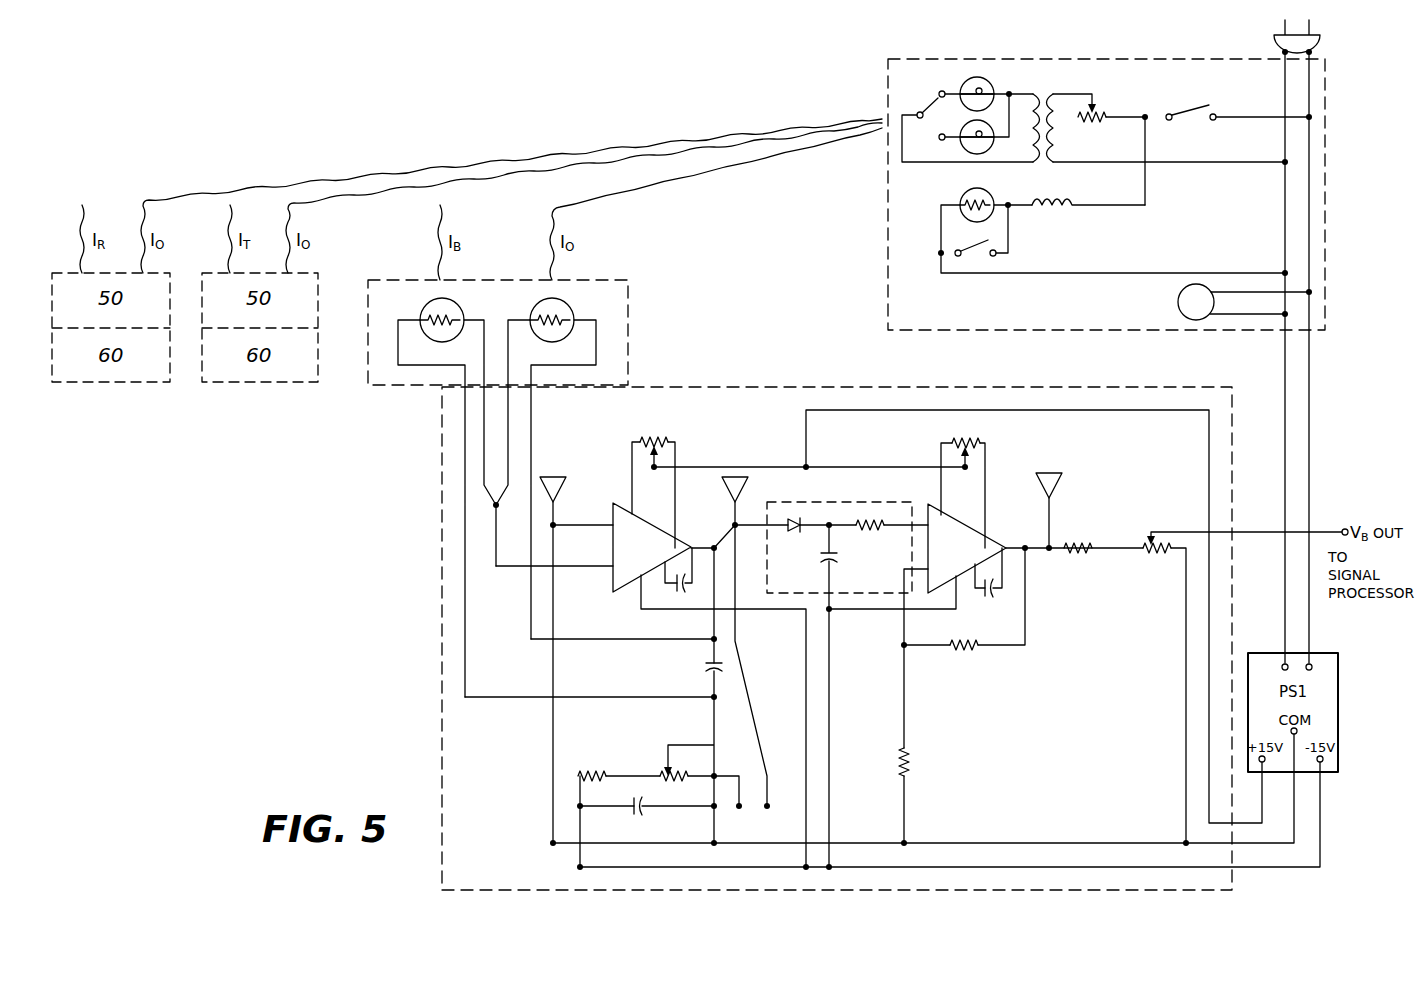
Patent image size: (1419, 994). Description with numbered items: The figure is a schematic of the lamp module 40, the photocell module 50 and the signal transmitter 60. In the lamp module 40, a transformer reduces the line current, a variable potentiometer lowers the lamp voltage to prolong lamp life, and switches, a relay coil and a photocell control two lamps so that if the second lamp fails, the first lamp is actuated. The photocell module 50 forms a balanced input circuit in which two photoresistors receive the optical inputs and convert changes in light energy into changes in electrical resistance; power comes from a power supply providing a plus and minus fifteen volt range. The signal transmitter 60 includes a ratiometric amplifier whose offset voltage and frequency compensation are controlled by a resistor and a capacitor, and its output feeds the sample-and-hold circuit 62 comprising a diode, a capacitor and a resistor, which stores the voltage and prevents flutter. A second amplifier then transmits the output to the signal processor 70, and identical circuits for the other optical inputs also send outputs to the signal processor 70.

The lamp module 40 is at (885, 101).
The photocell module 50 is at (631, 323).
The signal transmitter 60 is at (729, 386).
The sample-and-hold circuit 62 is at (871, 501).
The signal processing module 70 is at (110, 382).